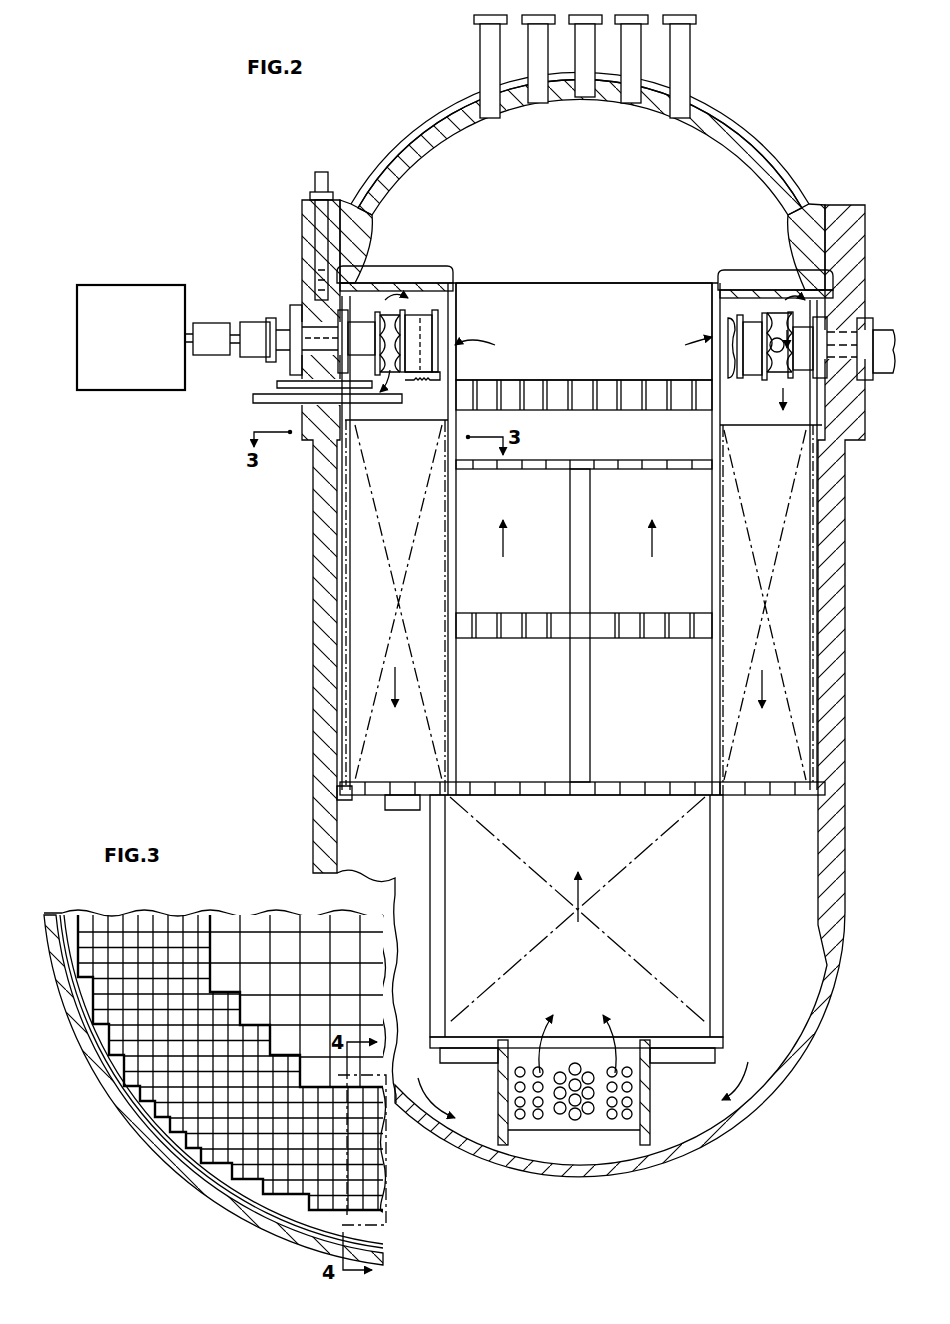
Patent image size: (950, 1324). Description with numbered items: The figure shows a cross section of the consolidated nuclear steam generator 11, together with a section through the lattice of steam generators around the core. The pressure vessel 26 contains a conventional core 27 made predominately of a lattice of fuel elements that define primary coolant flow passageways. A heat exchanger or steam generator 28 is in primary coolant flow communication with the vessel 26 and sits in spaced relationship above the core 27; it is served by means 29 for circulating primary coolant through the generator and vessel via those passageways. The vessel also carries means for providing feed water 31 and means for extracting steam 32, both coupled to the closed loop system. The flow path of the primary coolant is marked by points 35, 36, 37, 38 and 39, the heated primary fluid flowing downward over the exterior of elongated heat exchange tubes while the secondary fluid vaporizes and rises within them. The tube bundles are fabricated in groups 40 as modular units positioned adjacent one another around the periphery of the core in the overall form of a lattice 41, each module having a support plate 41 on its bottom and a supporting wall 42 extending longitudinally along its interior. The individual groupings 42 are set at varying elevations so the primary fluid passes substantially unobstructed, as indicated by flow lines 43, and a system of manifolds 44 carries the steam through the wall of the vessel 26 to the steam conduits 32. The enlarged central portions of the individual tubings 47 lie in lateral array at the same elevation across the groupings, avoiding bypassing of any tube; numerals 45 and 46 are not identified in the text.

In FIG. 2, the consolidated nuclear steam generator 11 is at (440, 103).
In FIG. 2, the pressure vessel 26 is at (310, 706).
In FIG. 2, the core 27 is at (588, 842).
In FIG. 2, the steam generator 28 is at (393, 610).
In FIG. 2, the means for circulating primary coolant 29 is at (252, 326).
In FIG. 2, the means for providing feed water 31 is at (277, 384).
In FIG. 2, the means for extracting steam 32 is at (251, 398).
In FIG. 2, the primary coolant flow path point 35 is at (430, 378).
In FIG. 2, the primary coolant flow path point 36 is at (403, 681).
In FIG. 2, the primary coolant flow path point 37 is at (584, 917).
In FIG. 2, the primary coolant flow path point 38 is at (505, 541).
In FIG. 2, the primary coolant flow path point 39 is at (482, 368).
In FIG. 2, the modular unit group of tubes 40 is at (398, 1168).
In FIG. 2, the lattice 41 is at (337, 790).
In FIG. 3, the lattice 41 is at (178, 1146).
In FIG. 2, the supporting wall 42 is at (449, 697).
In FIG. 2, the flow lines 43 is at (458, 657).
In FIG. 2, the system of manifolds 44 is at (504, 783).
In FIG. 2, the core support grid 45 is at (508, 613).
In FIG. 2, the upper grid plate 46 is at (542, 463).
In FIG. 2, the individual tubings 47 is at (528, 391).